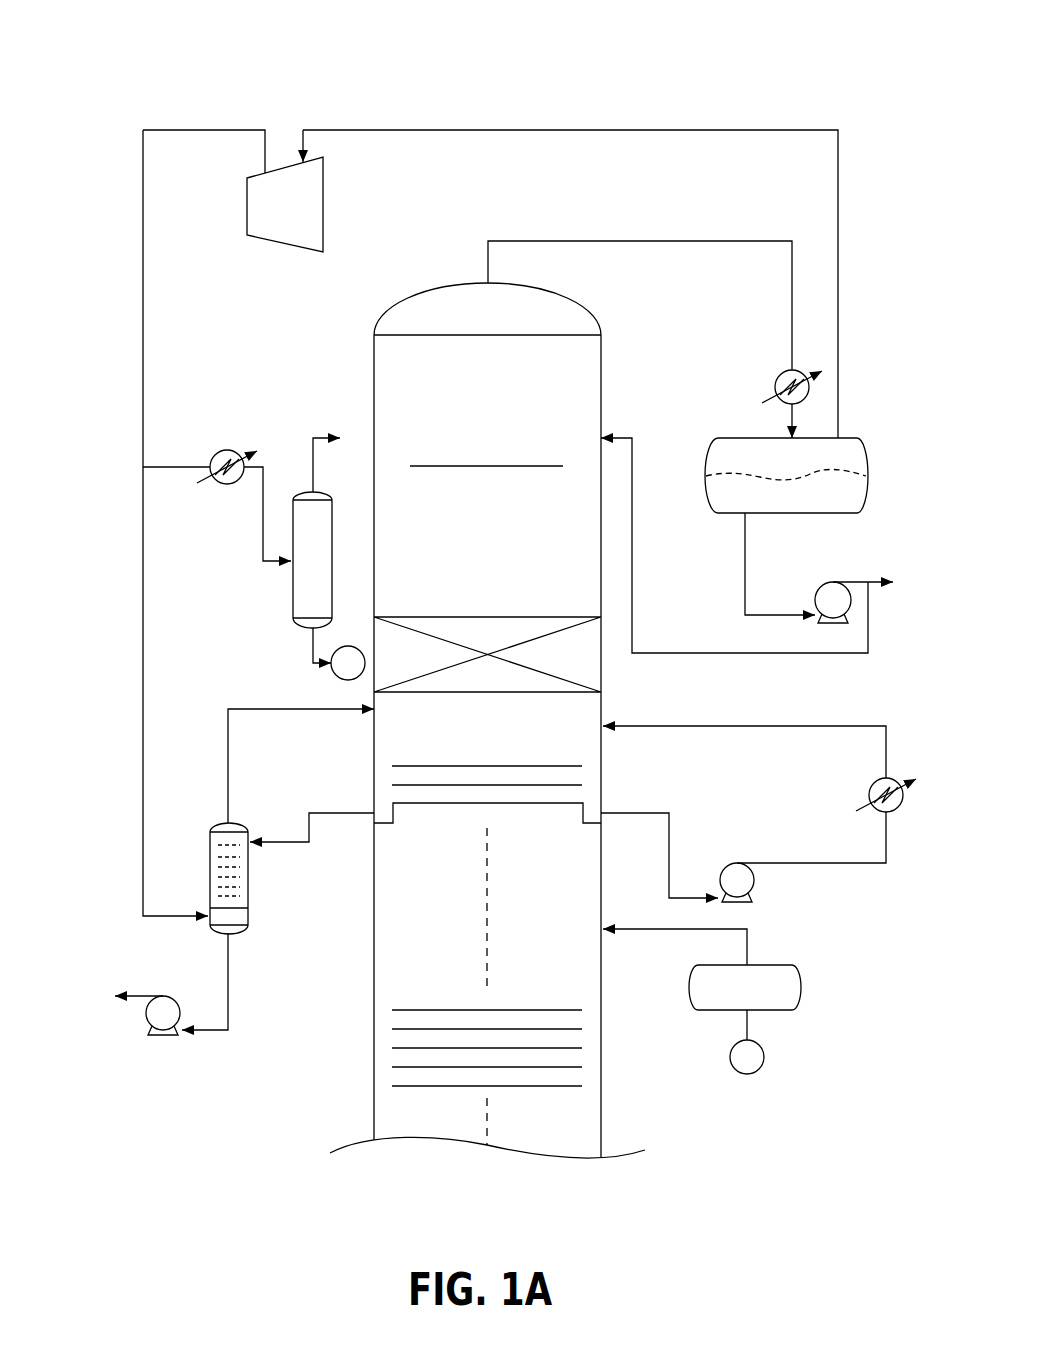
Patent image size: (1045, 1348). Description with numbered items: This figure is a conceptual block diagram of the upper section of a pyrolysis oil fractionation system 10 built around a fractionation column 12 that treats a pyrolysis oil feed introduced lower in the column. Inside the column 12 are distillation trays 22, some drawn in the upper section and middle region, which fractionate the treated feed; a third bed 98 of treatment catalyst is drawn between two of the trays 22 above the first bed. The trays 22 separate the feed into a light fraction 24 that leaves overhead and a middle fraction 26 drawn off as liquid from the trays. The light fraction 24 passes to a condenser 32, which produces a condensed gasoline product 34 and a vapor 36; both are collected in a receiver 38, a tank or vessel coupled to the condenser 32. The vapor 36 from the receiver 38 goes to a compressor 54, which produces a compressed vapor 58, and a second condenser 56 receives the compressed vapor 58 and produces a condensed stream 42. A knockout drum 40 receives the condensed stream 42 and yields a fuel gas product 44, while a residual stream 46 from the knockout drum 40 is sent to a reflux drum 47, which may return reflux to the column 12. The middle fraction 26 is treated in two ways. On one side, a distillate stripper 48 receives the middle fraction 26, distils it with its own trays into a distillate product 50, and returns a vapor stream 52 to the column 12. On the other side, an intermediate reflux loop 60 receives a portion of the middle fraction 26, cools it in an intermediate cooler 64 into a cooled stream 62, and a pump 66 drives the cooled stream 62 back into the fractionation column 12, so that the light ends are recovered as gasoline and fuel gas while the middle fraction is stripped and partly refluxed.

The pyrolysis oil fractionation system 10 is at (133, 62).
The fractionation column 12 is at (372, 386).
The distillation trays 22 is at (552, 1010).
The light fraction 24 is at (595, 241).
The middle fraction 26 is at (345, 813).
The condenser 32 is at (800, 372).
The gasoline product 34 is at (843, 500).
The vapor 36 is at (840, 410).
The receiver 38 is at (740, 438).
The knockout drum 40 is at (293, 608).
The condensed stream 42 is at (263, 500).
The fuel gas product 44 is at (313, 460).
The residual stream 46 is at (313, 655).
The reflux drum 47 is at (800, 988).
The distillate stripper 48 is at (250, 887).
The distillate product 50 is at (230, 988).
The vapor stream 52 is at (228, 740).
The compressor 54 is at (265, 235).
The second condenser 56 is at (222, 450).
The compressed vapor 58 is at (143, 332).
The intermediate reflux loop 60 is at (808, 724).
The cooled stream 62 is at (650, 724).
The intermediate cooler 64 is at (904, 808).
The pump 66 is at (757, 886).
The third bed 98 is at (497, 640).